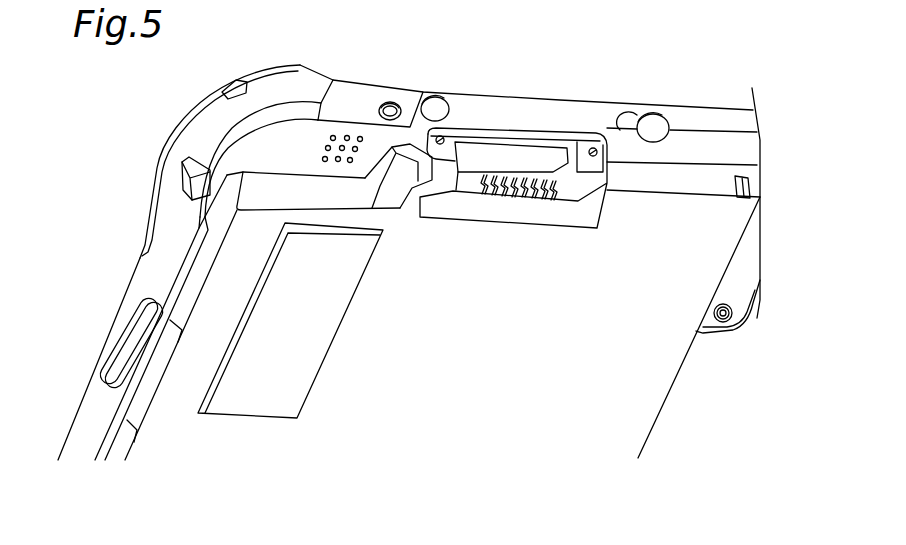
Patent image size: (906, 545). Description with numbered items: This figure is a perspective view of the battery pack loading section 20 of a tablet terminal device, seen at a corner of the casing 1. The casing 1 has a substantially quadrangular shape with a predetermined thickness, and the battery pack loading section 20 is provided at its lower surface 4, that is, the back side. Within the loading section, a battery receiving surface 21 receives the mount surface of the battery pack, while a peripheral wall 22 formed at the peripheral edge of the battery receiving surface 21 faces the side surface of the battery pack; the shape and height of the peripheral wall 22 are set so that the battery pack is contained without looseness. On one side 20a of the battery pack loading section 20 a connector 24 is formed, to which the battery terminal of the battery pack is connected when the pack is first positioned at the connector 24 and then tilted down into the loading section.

The casing 1 is at (85, 378).
The lower surface 4 is at (465, 110).
The battery pack loading section 20 is at (657, 308).
The one side of the battery pack loading section 20a is at (685, 177).
The battery receiving surface 21 is at (628, 408).
The peripheral wall 22 is at (192, 296).
The connector 24 is at (555, 182).